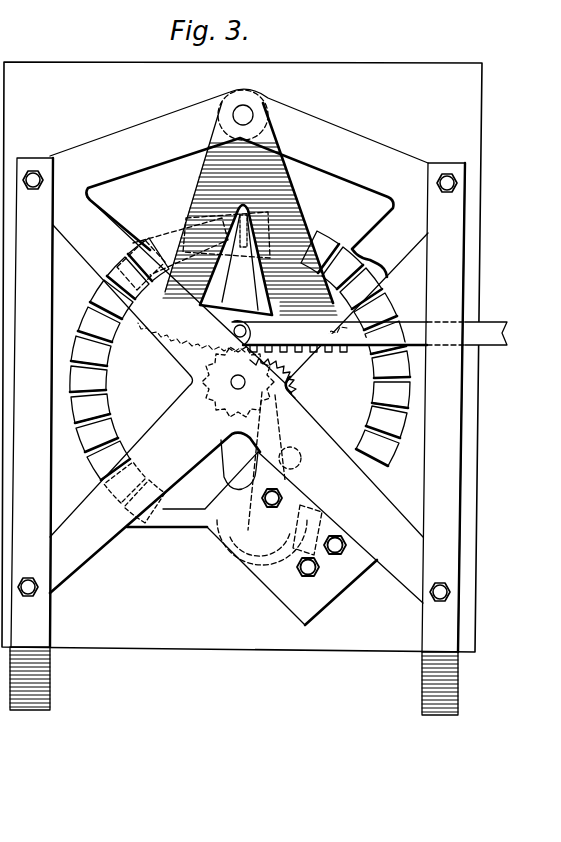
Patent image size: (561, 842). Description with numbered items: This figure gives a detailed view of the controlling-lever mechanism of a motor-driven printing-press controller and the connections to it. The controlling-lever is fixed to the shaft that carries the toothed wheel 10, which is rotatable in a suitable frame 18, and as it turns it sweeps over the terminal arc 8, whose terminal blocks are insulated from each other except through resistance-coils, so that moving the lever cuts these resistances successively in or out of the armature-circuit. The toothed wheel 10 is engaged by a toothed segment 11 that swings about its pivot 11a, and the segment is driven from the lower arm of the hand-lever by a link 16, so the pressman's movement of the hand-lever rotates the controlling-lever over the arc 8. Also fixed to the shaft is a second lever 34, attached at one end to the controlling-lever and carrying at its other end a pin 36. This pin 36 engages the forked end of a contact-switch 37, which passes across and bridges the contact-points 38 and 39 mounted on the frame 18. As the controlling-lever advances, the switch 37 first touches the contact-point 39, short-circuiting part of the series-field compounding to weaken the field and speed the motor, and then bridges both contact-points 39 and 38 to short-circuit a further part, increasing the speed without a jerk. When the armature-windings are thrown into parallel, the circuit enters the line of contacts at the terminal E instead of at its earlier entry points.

The terminal arc 8 is at (93, 457).
The toothed wheel 10 is at (231, 384).
The toothed segment 11 is at (300, 200).
The pivot 11a is at (244, 115).
The link 16 is at (507, 332).
The frame 18 is at (121, 381).
The second lever 34 is at (236, 261).
The pin 36 is at (155, 513).
The contact-switch 37 is at (352, 506).
The contact-point 38 is at (342, 528).
The contact-point 39 is at (278, 596).
The terminal E is at (367, 446).